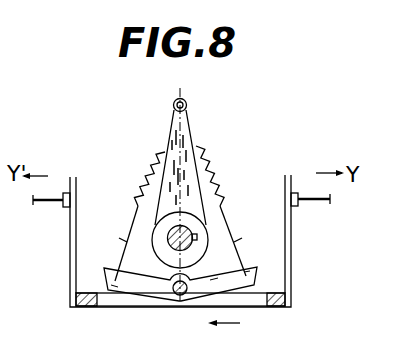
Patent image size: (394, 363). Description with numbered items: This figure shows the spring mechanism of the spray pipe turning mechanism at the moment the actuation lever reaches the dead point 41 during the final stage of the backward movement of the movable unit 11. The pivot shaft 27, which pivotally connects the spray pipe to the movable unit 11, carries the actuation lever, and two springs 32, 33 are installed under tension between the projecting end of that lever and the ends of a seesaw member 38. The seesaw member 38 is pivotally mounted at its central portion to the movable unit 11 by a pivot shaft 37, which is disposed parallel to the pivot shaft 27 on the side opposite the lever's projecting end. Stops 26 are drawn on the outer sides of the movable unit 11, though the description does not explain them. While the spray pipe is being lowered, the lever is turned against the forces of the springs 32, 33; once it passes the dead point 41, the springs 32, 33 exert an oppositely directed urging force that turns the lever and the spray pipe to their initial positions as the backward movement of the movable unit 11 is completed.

The movable unit 11 is at (277, 307).
The stopper 26 is at (47, 201).
The pivot shaft 27 is at (191, 246).
The spring 32 is at (198, 150).
The spring 33 is at (160, 154).
The pivot shaft 37 is at (177, 297).
The seesaw member 38 is at (129, 293).
The dead point 41 is at (174, 104).